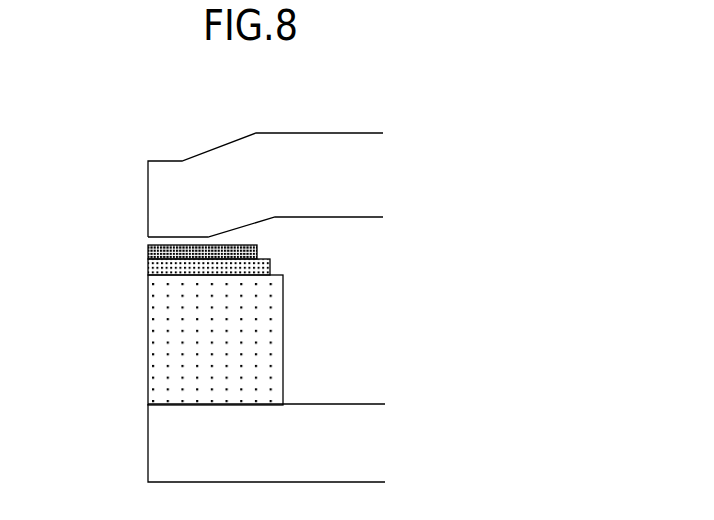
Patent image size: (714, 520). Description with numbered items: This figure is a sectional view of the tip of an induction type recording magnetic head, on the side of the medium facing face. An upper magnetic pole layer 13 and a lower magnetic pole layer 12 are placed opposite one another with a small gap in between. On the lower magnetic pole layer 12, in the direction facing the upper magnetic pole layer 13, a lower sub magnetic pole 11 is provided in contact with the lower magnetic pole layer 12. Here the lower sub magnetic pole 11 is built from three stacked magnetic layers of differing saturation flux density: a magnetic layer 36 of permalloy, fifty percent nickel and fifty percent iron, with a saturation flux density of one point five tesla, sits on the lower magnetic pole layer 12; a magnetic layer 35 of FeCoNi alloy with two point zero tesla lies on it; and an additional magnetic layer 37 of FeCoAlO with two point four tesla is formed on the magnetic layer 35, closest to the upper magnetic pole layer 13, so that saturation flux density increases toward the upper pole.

The lower sub magnetic pole 11 is at (76, 222).
The lower magnetic pole layer 12 is at (160, 449).
The upper magnetic pole layer 13 is at (148, 188).
The magnetic layer 35 is at (148, 269).
The magnetic layer 36 is at (148, 335).
The magnetic layer 37 is at (148, 252).